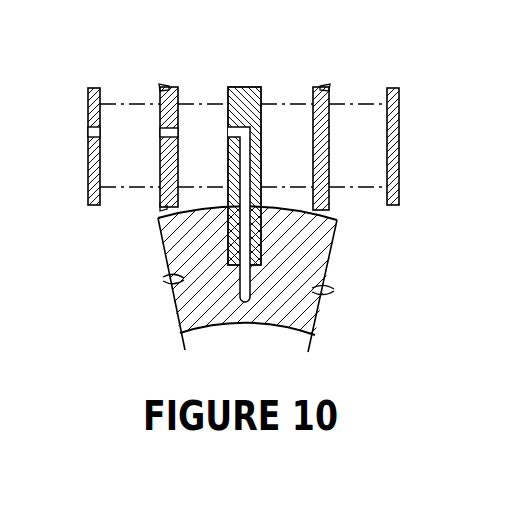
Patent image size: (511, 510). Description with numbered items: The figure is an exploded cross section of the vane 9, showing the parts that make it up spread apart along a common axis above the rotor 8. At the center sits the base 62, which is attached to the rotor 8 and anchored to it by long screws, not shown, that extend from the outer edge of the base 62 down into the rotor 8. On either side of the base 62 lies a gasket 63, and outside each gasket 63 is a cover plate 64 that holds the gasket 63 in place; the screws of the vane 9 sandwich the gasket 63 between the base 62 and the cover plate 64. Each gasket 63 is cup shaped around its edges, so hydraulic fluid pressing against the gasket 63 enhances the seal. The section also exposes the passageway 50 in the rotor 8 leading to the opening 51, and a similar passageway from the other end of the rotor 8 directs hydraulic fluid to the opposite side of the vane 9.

The rotor 8 is at (305, 257).
The vane 9 is at (418, 192).
The passageway 50 is at (245, 217).
The opening 51 is at (88, 131).
The base 62 is at (246, 87).
The gasket 63 is at (172, 86).
The cover plate 64 is at (97, 88).